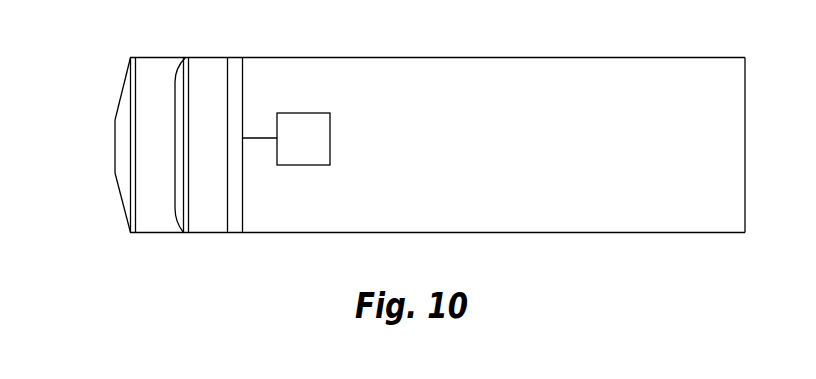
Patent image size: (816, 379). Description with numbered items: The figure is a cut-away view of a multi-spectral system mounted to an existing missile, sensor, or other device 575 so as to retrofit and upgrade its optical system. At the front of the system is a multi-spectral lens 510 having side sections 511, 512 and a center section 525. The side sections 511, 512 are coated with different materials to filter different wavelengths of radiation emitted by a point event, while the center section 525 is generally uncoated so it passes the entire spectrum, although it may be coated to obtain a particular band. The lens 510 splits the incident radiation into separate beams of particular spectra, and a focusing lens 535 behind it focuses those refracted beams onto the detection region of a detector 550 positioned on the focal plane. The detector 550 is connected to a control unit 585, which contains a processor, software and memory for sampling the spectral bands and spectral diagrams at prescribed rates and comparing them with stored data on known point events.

The multi-spectral lens 510 is at (131, 233).
The side section 511 is at (125, 100).
The side section 512 is at (122, 182).
The center section 525 is at (115, 153).
The focusing lens 535 is at (193, 57).
The detector 550 is at (245, 70).
The existing device 575 is at (588, 150).
The control unit 585 is at (330, 113).